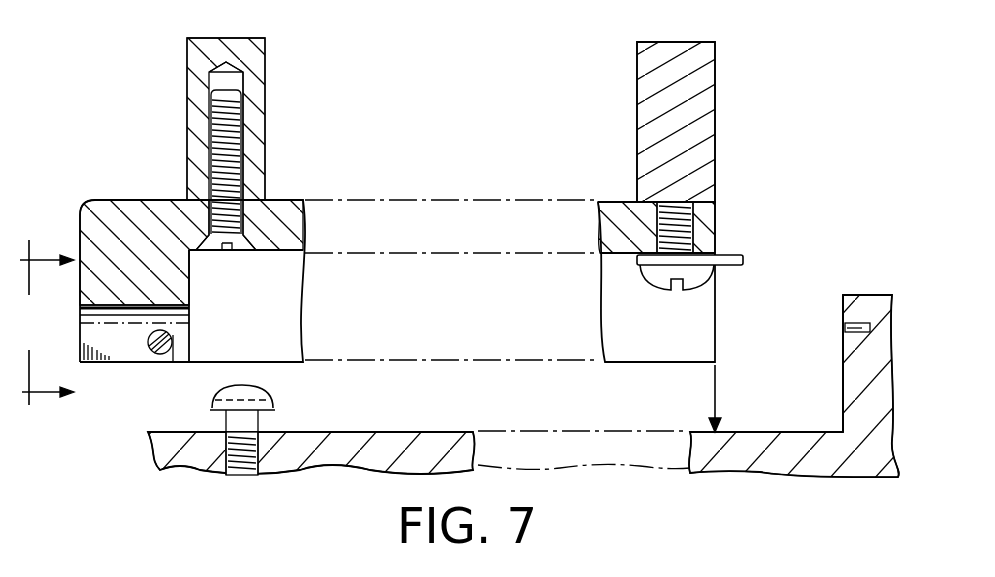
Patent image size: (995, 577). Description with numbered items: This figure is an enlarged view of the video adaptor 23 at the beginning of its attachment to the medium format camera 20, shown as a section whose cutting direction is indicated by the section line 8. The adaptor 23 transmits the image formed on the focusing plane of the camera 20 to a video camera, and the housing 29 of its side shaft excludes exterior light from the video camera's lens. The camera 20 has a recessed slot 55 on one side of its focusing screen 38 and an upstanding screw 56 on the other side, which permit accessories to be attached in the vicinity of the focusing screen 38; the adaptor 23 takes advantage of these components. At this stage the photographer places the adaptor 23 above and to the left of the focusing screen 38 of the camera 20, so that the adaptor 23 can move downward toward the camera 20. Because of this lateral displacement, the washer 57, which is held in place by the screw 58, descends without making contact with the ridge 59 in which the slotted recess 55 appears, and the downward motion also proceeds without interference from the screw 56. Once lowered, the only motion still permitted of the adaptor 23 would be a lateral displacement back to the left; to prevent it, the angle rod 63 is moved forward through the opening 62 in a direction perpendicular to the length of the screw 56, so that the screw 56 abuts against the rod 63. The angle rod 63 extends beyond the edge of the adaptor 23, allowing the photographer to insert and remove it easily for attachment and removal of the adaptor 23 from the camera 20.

The section line 8- 8 is at (47, 332).
The medium format camera 20 is at (780, 487).
The video adaptor 23 is at (728, 78).
The housing 29 is at (432, 220).
The focusing screen 38 is at (325, 453).
The recessed slot 55 is at (860, 331).
The upstanding screw 56 is at (247, 393).
The washer 57 is at (727, 252).
The screw 58 is at (659, 292).
The ridge 59 is at (883, 397).
The opening 62 is at (118, 325).
The angle rod 63 is at (175, 338).